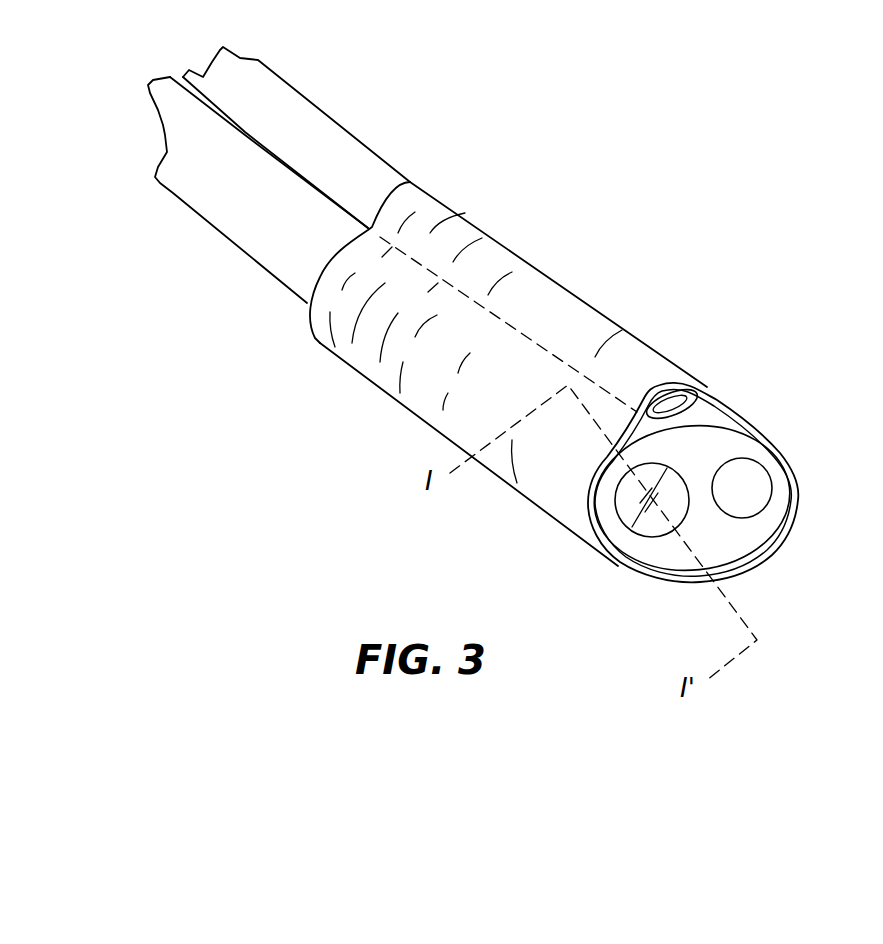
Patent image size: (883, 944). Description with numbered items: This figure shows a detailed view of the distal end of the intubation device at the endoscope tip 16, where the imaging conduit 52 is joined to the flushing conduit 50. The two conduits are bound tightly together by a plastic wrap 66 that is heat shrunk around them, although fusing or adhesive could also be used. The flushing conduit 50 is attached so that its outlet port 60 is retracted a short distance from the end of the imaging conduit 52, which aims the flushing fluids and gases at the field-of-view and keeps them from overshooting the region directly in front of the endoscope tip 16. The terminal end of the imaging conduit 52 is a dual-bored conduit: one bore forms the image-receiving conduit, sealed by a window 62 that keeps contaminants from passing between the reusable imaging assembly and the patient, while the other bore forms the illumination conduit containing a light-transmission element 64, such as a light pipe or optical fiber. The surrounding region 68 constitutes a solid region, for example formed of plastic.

The endoscope tip 16 is at (592, 200).
The flushing conduit 50 is at (330, 118).
The imaging conduit 52 is at (247, 255).
The outlet port 60 is at (675, 402).
The window 62 is at (628, 498).
The light-transmission element 64 is at (762, 480).
The plastic wrap 66 is at (553, 300).
The solid region 68 is at (745, 548).